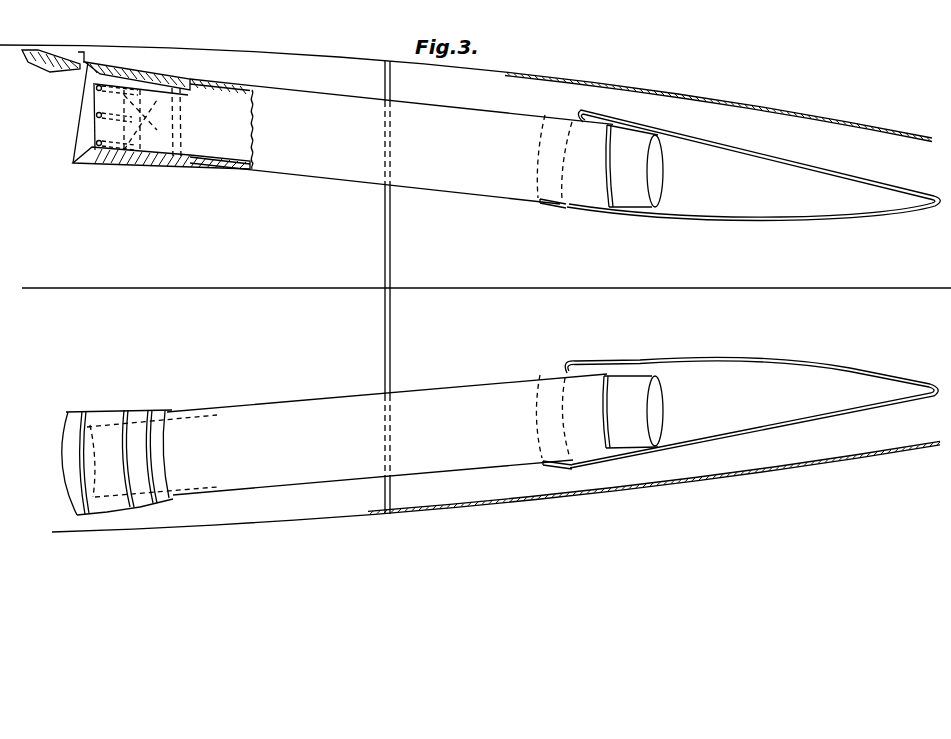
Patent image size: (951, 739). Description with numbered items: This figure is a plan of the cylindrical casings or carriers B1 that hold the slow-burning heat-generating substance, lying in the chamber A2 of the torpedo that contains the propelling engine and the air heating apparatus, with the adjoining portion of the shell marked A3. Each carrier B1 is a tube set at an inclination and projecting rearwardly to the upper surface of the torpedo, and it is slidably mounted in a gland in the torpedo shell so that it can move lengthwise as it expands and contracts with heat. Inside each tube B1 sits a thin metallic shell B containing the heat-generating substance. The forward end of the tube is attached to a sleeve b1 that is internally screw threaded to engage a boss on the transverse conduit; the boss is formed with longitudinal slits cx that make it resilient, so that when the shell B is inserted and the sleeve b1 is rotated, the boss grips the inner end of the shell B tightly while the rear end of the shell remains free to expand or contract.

The chamber containing the propelling engine and the air heating apparatus A2 is at (668, 287).
The wing section A3 is at (204, 263).
The thin metallic shell B is at (213, 92).
The cylindrical casing or carrier B1 is at (390, 287).
The sleeve b1 is at (123, 68).
The longitudinal slit cx is at (157, 182).